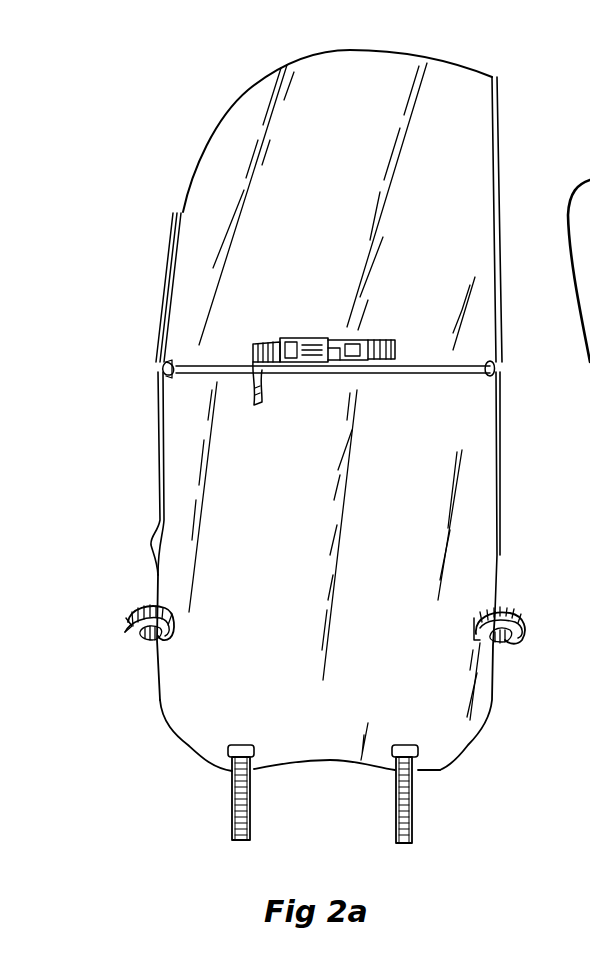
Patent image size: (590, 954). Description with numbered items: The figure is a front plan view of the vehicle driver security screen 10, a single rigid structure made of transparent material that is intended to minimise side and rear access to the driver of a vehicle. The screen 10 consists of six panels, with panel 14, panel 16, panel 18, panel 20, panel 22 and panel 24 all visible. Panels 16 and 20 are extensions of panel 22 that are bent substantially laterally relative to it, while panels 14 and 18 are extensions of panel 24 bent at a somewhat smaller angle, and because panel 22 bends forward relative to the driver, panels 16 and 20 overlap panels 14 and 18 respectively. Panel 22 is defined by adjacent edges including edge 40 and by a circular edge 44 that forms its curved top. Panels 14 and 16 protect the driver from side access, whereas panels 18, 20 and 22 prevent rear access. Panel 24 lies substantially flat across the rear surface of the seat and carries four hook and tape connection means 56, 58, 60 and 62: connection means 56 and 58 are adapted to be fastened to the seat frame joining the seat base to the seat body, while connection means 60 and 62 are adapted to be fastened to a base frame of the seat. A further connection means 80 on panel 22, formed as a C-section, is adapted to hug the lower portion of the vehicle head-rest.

The vehicle driver security screen 10 is at (172, 168).
The panel 14 is at (500, 497).
The panel 16 is at (500, 137).
The panel 18 is at (157, 458).
The panel 20 is at (162, 310).
The panel 22 is at (222, 225).
The panel 24 is at (207, 703).
The edge 40 is at (392, 374).
The circular edge 44 is at (247, 92).
The connection means 56 is at (500, 626).
The connection means 58 is at (128, 619).
The connection means 60 is at (412, 813).
The connection means 62 is at (252, 815).
The connection means 80 is at (322, 338).